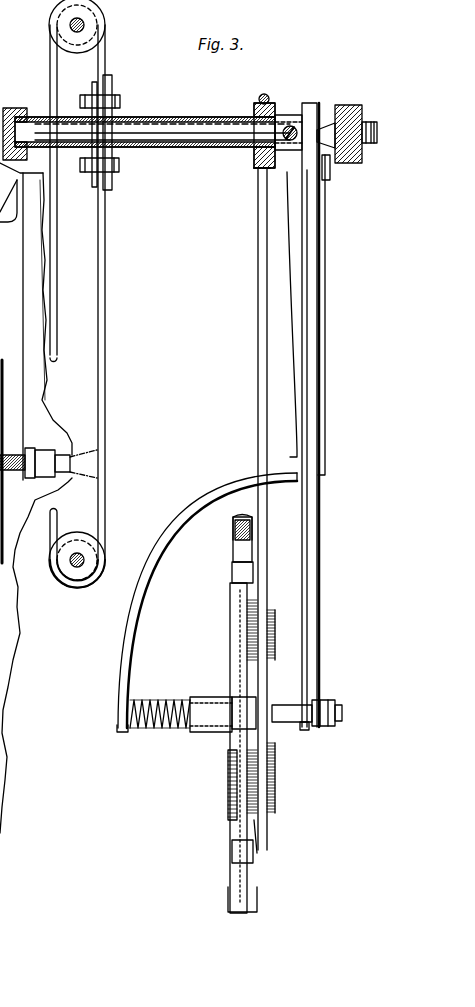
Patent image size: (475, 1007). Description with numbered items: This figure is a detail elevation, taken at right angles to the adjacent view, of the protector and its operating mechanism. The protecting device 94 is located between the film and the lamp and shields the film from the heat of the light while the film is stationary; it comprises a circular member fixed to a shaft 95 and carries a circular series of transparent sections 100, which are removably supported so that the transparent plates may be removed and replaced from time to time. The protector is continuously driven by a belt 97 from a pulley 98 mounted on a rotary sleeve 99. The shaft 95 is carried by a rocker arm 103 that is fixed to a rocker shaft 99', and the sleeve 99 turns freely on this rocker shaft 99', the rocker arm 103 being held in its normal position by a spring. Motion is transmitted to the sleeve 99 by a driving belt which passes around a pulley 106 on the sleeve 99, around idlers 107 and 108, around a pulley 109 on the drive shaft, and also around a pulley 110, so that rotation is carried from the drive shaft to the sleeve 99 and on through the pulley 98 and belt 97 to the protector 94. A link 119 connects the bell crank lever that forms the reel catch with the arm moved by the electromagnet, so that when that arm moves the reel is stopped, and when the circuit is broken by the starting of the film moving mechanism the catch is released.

The protecting device 94 is at (253, 575).
The shaft 95 is at (12, 453).
The belt 97 is at (260, 341).
The pulley 98 is at (272, 103).
The rotary sleeve 99 is at (152, 122).
The rocker shaft 99' is at (101, 131).
The transparent sections 100 is at (242, 617).
The rocker arm 103 is at (311, 452).
The pulley 106 is at (115, 124).
The idler 107 is at (112, 92).
The idler 108 is at (117, 173).
The pulley 109 is at (94, 580).
The pulley 110 is at (98, 26).
The link 119 is at (323, 363).